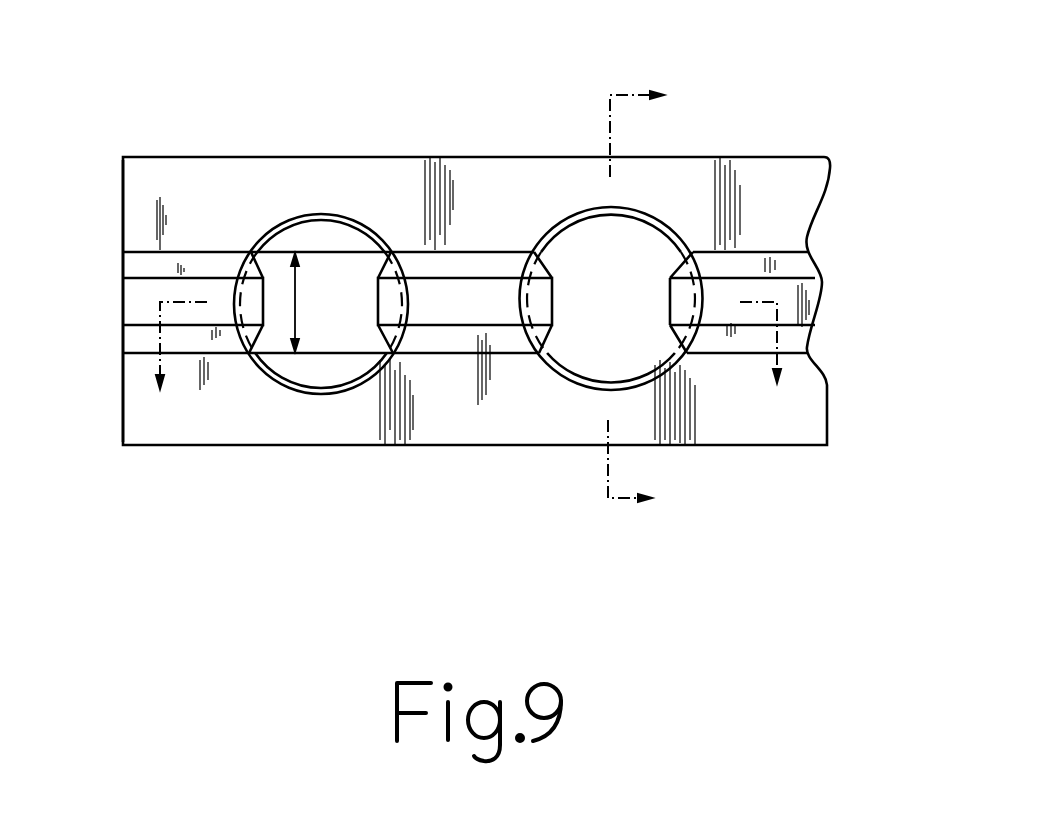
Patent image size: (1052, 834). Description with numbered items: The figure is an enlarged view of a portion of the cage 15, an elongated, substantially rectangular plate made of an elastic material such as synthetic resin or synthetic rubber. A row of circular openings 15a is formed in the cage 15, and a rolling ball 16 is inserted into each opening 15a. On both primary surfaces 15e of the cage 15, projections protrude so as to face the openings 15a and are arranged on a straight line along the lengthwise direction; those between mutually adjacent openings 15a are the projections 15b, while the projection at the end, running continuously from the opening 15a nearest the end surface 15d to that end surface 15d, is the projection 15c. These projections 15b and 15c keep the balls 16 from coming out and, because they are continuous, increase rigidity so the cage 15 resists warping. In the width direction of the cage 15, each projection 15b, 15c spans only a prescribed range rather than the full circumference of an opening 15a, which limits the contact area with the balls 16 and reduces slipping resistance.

The cage 15 is at (853, 133).
The circular opening 15a is at (341, 394).
The projection 15b is at (473, 292).
The projection 15c is at (215, 292).
The end surface 15d is at (122, 200).
The primary surface 15e is at (197, 200).
The ball 16 is at (338, 232).